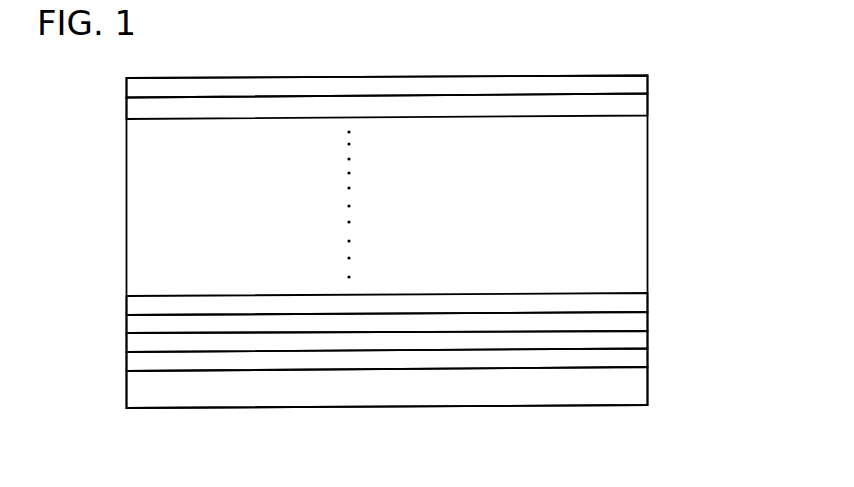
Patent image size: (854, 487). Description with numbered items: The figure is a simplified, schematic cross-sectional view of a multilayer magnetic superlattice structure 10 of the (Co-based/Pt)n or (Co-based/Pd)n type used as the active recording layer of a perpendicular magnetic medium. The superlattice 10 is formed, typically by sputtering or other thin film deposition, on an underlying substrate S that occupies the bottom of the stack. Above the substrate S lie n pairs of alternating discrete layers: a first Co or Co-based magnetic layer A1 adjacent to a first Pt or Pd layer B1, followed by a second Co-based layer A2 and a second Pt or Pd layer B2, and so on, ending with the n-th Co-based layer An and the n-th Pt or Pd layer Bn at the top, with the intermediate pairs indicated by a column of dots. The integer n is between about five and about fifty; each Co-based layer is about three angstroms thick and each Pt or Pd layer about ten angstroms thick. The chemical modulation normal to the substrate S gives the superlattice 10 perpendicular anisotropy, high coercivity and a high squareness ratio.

The multilayer superlattice structure 10 is at (727, 160).
The substrate S is at (648, 385).
The first Co-based layer A1 is at (648, 358).
The first Pt or Pd layer B1 is at (648, 340).
The second Co-based layer A2 is at (648, 319).
The second Pt or Pd layer B2 is at (648, 299).
The n-th Co-based layer An is at (648, 104).
The n-th Pt or Pd layer Bn is at (648, 83).